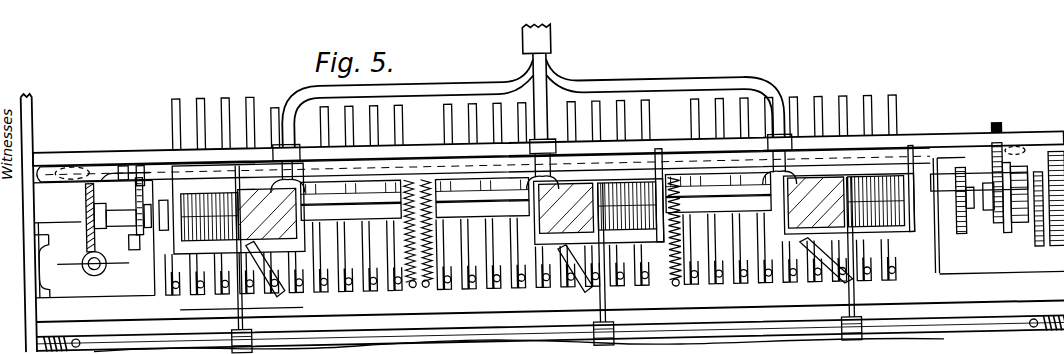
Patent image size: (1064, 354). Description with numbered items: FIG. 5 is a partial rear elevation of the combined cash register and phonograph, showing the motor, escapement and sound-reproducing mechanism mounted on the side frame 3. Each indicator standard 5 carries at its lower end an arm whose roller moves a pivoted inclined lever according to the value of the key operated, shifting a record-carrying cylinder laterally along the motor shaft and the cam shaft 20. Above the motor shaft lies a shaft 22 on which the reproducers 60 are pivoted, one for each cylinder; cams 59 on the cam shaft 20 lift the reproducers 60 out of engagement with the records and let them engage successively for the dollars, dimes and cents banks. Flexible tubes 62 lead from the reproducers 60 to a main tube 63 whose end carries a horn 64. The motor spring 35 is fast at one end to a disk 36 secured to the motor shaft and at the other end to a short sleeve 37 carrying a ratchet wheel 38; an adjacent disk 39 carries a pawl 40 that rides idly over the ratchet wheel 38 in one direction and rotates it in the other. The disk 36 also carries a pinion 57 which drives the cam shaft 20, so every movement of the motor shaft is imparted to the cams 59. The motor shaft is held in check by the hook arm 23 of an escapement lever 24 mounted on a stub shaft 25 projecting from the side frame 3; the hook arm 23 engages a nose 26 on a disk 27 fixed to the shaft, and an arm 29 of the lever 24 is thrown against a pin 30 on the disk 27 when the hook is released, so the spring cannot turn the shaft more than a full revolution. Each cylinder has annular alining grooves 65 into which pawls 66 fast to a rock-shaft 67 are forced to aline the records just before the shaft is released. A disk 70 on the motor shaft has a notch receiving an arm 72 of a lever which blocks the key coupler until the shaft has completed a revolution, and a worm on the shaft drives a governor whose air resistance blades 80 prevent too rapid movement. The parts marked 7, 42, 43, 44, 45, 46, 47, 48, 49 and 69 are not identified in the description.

The side frame 3 is at (1044, 255).
The indicator standard 5 is at (238, 101).
The frame bar 7 is at (50, 268).
The cam shaft 20 is at (408, 175).
The shaft 22 is at (122, 162).
The hook arm 23 is at (141, 176).
The escapement lever 24 is at (536, 208).
The stub shaft 25 is at (85, 222).
The nose 26 is at (112, 168).
The disk 27 is at (106, 217).
The arm 29 is at (128, 243).
The pin 30 is at (137, 215).
The motor spring 35 is at (985, 193).
The disk 36 is at (1010, 235).
The short sleeve 37 is at (998, 225).
The ratchet wheel 38 is at (1040, 240).
The disk 39 is at (1047, 172).
The pawl 40 is at (652, 172).
The levers 42 is at (322, 292).
The rack bar 43 is at (1045, 272).
The bar 44 is at (1036, 270).
The spring 45 is at (418, 295).
The rod 46 is at (234, 288).
The armature 47 is at (541, 208).
The pivot pins 48 is at (192, 290).
The lever 49 is at (55, 222).
The pinion 57 is at (965, 250).
The cams 59 is at (996, 143).
The reproducers 60 is at (536, 188).
The flexible tubes 62 is at (420, 93).
The main tube 63 is at (525, 56).
The horn 64 is at (548, 149).
The annular alining grooves 65 is at (225, 200).
The pawls 66 is at (273, 297).
The rock-shaft 67 is at (462, 343).
The worm 69 is at (62, 336).
The disk 70 is at (950, 195).
The arm 72 is at (906, 262).
The air resistance blades 80 is at (98, 276).